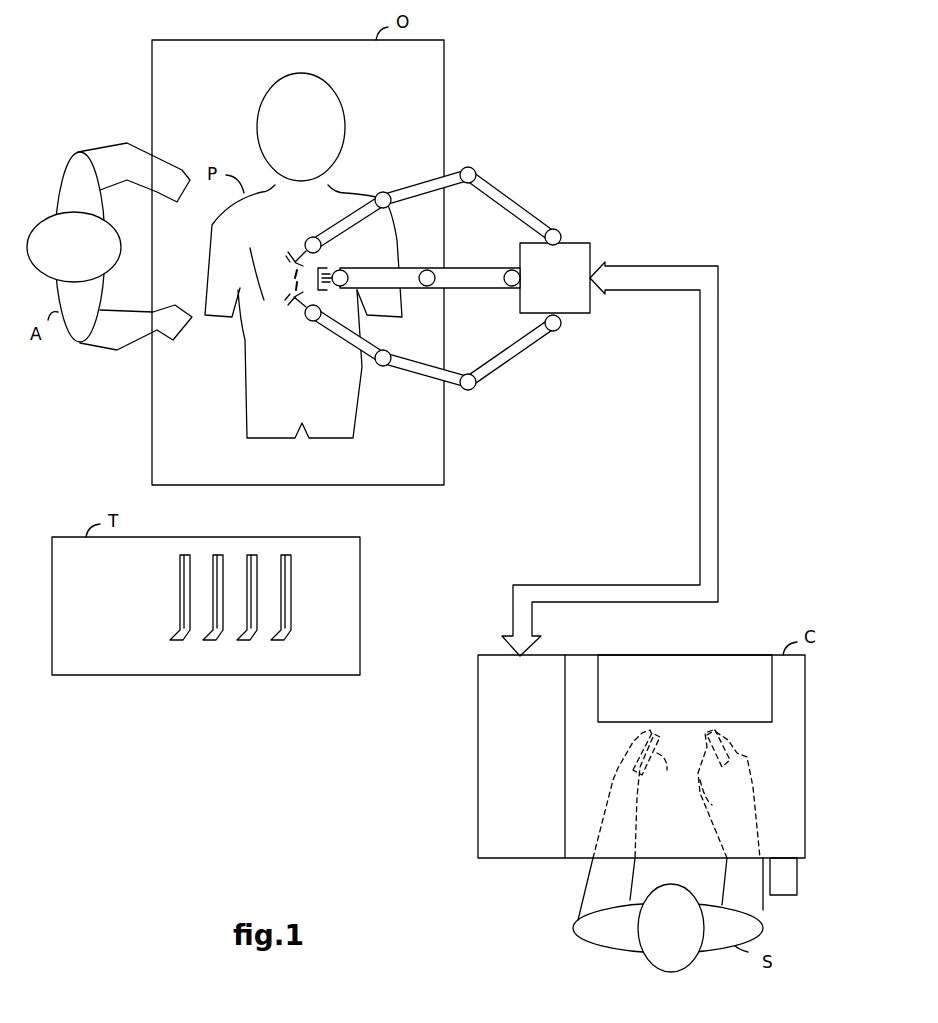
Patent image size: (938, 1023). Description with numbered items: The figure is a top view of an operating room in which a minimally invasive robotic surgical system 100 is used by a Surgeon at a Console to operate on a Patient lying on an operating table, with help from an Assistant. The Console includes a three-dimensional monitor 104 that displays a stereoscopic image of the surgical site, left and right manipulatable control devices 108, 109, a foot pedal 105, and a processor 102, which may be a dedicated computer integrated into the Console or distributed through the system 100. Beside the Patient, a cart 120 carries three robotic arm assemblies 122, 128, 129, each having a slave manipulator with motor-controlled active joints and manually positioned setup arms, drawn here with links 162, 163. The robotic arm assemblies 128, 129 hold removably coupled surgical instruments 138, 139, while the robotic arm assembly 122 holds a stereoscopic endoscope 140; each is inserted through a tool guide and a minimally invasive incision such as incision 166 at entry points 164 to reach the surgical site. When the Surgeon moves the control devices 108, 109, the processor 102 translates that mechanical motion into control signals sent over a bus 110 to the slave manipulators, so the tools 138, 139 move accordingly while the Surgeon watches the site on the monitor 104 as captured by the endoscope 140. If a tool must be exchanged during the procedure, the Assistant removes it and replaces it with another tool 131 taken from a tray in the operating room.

The minimally invasive robotic surgical system 100 is at (640, 115).
The processor 102 is at (535, 756).
The 3-D monitor 104 is at (685, 688).
The foot pedal 105 is at (797, 897).
The left manipulatable control device 108 is at (638, 794).
The right manipulatable control device 109 is at (723, 794).
The bus 110 is at (701, 534).
The patient side cart 120 is at (555, 278).
The robotic arm assembly 122 is at (460, 250).
The robotic arm assembly 128 is at (455, 350).
The robotic arm assembly 129 is at (497, 160).
The tool 131 is at (162, 608).
The surgical instrument 138 is at (287, 312).
The surgical instrument 139 is at (298, 240).
The stereoscopic endoscope 140 is at (332, 262).
The arm link 162 is at (420, 387).
The arm link 163 is at (380, 376).
The instrument port 164 is at (301, 335).
The incision 166 is at (284, 276).